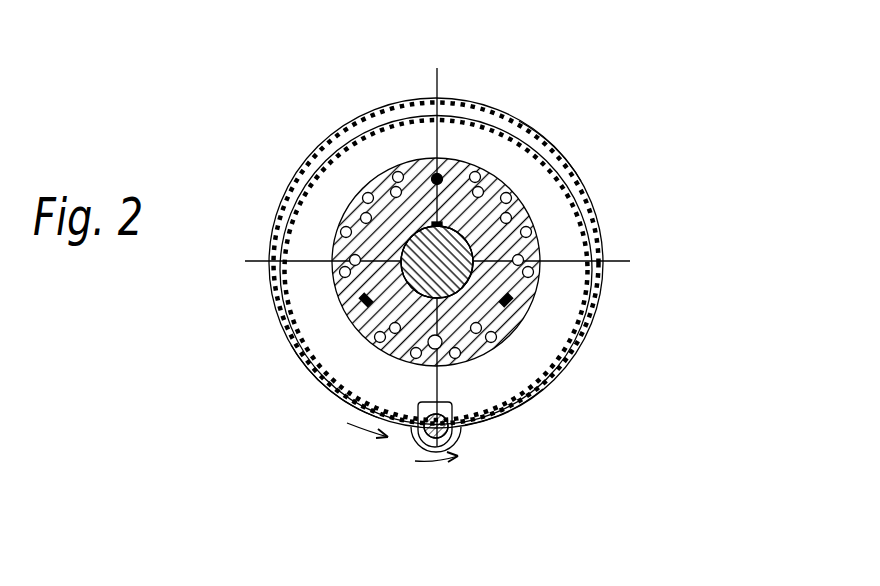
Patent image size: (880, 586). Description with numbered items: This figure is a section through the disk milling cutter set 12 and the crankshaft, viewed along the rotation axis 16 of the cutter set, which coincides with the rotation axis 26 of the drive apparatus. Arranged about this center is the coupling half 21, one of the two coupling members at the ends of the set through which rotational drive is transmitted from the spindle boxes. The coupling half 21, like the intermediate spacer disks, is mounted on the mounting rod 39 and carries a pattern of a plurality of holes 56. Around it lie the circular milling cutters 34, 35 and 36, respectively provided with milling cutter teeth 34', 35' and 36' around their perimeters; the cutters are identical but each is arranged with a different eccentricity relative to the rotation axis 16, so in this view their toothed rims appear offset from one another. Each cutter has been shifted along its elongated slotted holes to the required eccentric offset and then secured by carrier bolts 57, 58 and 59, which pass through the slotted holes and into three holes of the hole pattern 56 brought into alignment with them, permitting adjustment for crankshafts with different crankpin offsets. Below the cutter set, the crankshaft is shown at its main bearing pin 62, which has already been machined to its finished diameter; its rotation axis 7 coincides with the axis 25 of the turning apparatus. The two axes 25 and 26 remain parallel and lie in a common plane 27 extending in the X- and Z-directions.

The disk milling cutter set 12 is at (537, 126).
The plane 27 is at (437, 82).
The carrier bolt 58 is at (434, 177).
The circular milling cutter 35 is at (419, 263).
The milling cutter teeth 35' is at (435, 244).
The circular milling cutter 36 is at (467, 263).
The milling cutter teeth 36' is at (474, 263).
The holes 56 is at (342, 226).
The rotation axis 16 is at (592, 256).
The rotation axis 26 is at (445, 257).
The mounting rod 39 is at (455, 274).
The carrier bolt 57 is at (358, 308).
The carrier bolt 59 is at (508, 306).
The coupling half 21 is at (484, 346).
The circular milling cutter 34 is at (311, 415).
The milling cutter teeth 34' is at (527, 421).
The rotation axis 7 is at (416, 469).
The axis 25 is at (420, 442).
The main bearing pin 62 is at (452, 440).